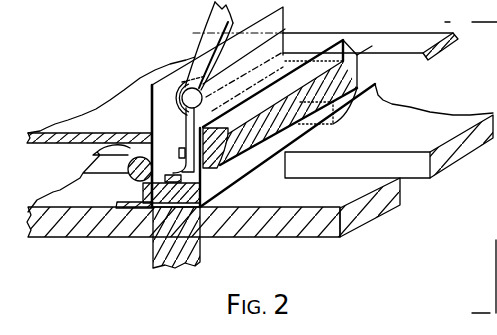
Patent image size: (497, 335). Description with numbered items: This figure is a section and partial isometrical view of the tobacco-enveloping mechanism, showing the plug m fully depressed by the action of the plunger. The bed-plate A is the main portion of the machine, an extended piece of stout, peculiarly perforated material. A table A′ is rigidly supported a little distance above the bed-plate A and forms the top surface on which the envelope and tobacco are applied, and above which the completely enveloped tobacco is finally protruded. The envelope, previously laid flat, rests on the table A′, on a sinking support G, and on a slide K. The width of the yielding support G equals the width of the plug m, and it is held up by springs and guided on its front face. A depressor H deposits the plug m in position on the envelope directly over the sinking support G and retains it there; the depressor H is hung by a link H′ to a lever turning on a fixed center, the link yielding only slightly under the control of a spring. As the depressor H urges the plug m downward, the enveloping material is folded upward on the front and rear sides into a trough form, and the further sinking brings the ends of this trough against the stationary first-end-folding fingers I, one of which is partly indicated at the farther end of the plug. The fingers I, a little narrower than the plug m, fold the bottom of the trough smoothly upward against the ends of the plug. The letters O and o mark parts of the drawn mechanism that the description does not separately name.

The bed-plate A is at (260, 160).
The table A′ is at (111, 100).
The sinking support G is at (176, 247).
The depressor H is at (169, 171).
The link H′ is at (182, 140).
The pivot O is at (191, 99).
The pin o is at (185, 155).
The plug m is at (171, 193).
The slide K is at (287, 123).
The first-end-folding finger I is at (328, 85).